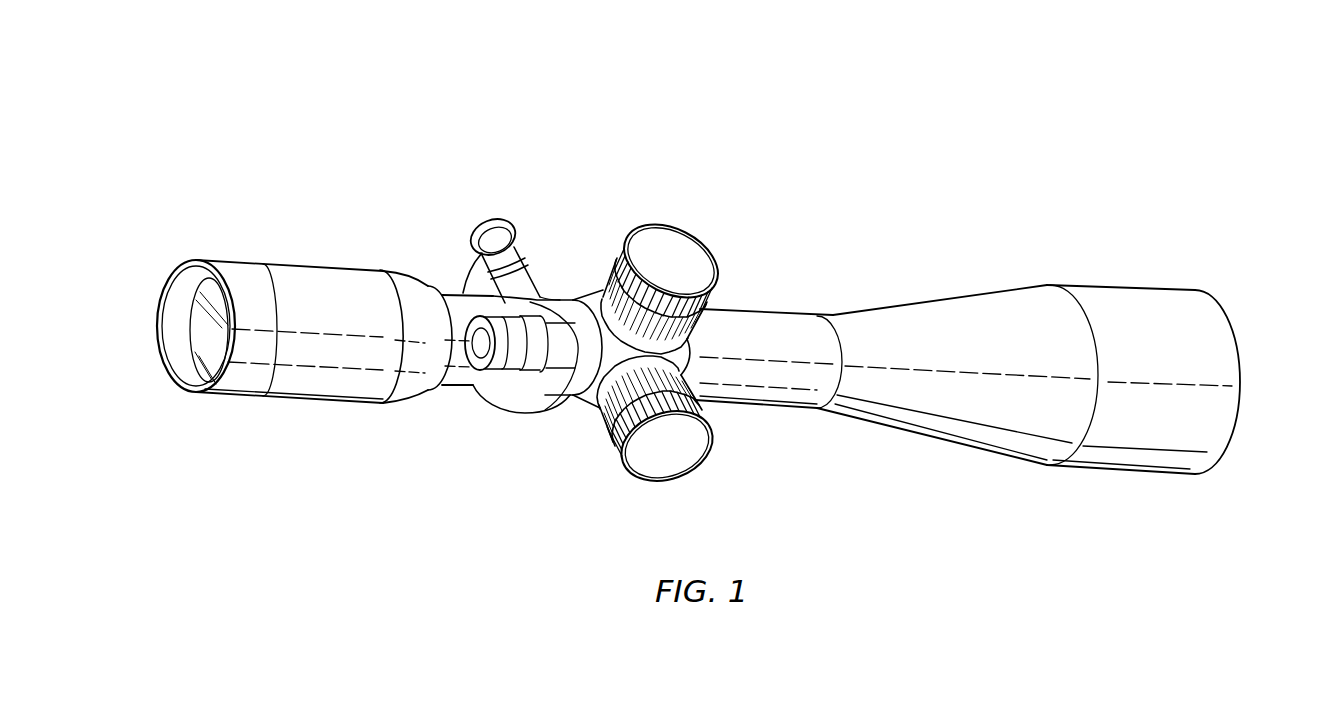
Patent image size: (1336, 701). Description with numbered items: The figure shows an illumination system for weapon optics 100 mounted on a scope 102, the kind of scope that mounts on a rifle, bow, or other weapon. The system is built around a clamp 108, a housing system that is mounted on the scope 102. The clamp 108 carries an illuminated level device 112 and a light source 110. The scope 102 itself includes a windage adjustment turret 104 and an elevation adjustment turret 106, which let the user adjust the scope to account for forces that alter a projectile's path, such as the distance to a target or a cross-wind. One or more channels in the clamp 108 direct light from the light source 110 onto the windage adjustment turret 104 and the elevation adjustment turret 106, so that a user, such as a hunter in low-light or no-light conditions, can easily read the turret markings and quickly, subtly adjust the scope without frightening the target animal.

The illumination system for weapon optics 100 is at (402, 127).
The scope 102 is at (773, 312).
The windage adjustment turret 104 is at (662, 230).
The elevation adjustment turret 106 is at (662, 472).
The clamp 108 is at (497, 215).
The light source 110 is at (493, 373).
The illuminated level device 112 is at (520, 240).